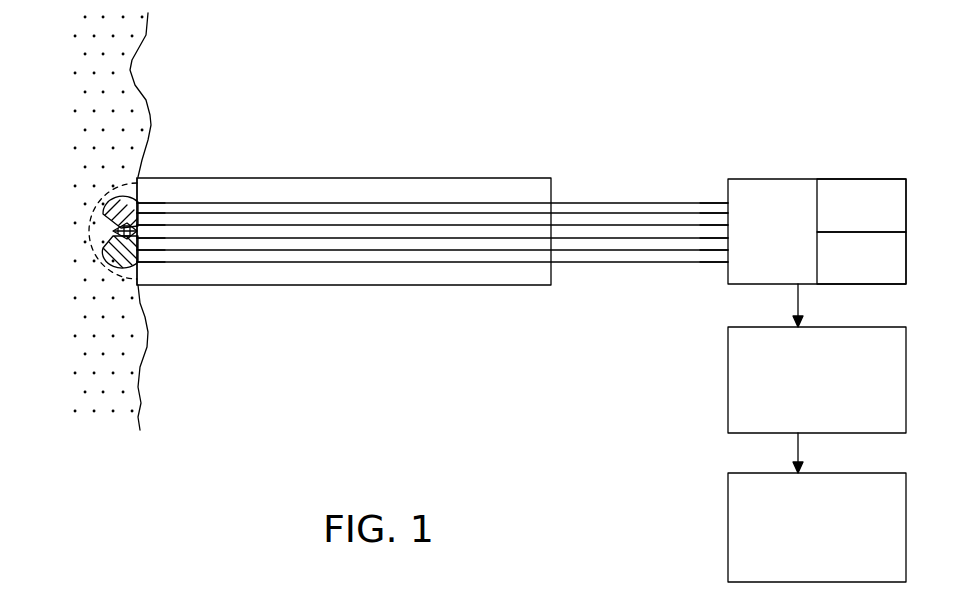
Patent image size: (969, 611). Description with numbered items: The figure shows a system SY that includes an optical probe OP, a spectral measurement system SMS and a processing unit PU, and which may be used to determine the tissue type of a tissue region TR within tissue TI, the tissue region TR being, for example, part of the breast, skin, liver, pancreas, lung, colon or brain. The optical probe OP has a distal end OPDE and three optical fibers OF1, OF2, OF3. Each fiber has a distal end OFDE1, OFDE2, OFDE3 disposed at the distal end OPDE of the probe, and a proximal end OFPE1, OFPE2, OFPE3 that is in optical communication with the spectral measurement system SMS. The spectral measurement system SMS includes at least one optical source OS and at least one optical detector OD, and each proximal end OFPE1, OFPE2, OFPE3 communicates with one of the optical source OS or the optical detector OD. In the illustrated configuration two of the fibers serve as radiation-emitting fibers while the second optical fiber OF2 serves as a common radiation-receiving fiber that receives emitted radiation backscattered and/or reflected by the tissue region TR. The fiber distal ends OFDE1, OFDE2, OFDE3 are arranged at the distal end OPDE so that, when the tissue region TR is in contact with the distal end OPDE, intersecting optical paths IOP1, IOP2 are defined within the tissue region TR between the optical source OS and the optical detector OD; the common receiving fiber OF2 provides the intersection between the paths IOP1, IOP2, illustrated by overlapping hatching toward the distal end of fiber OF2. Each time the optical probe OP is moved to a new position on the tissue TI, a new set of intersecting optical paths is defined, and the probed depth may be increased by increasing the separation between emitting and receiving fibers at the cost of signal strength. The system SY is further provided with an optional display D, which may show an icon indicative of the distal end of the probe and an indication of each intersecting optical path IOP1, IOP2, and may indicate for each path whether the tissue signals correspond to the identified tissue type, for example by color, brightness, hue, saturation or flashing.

The system SY is at (560, 92).
The tissue TI is at (135, 110).
The optical probe OP is at (330, 285).
The first optical fiber OF1 is at (328, 209).
The second optical fiber OF2 is at (363, 235).
The third optical fiber OF3 is at (405, 257).
The distal end of first optical fiber OFDE1 is at (143, 207).
The distal end of second optical fiber OFDE2 is at (155, 230).
The distal end of third optical fiber OFDE3 is at (150, 254).
The proximal end of first optical fiber OFPE1 is at (727, 208).
The proximal end of second optical fiber OFPE2 is at (727, 227).
The proximal end of third optical fiber OFPE3 is at (727, 255).
The distal end of optical probe OPDE is at (137, 252).
The first intersecting optical path IOP1 is at (105, 218).
The second intersecting optical path IOP2 is at (103, 248).
The tissue region TR is at (105, 195).
The spectral measurement system SMS is at (817, 195).
The optical source OS is at (861, 205).
The optical detector OD is at (861, 258).
The processing unit PU is at (817, 380).
The display D is at (817, 527).